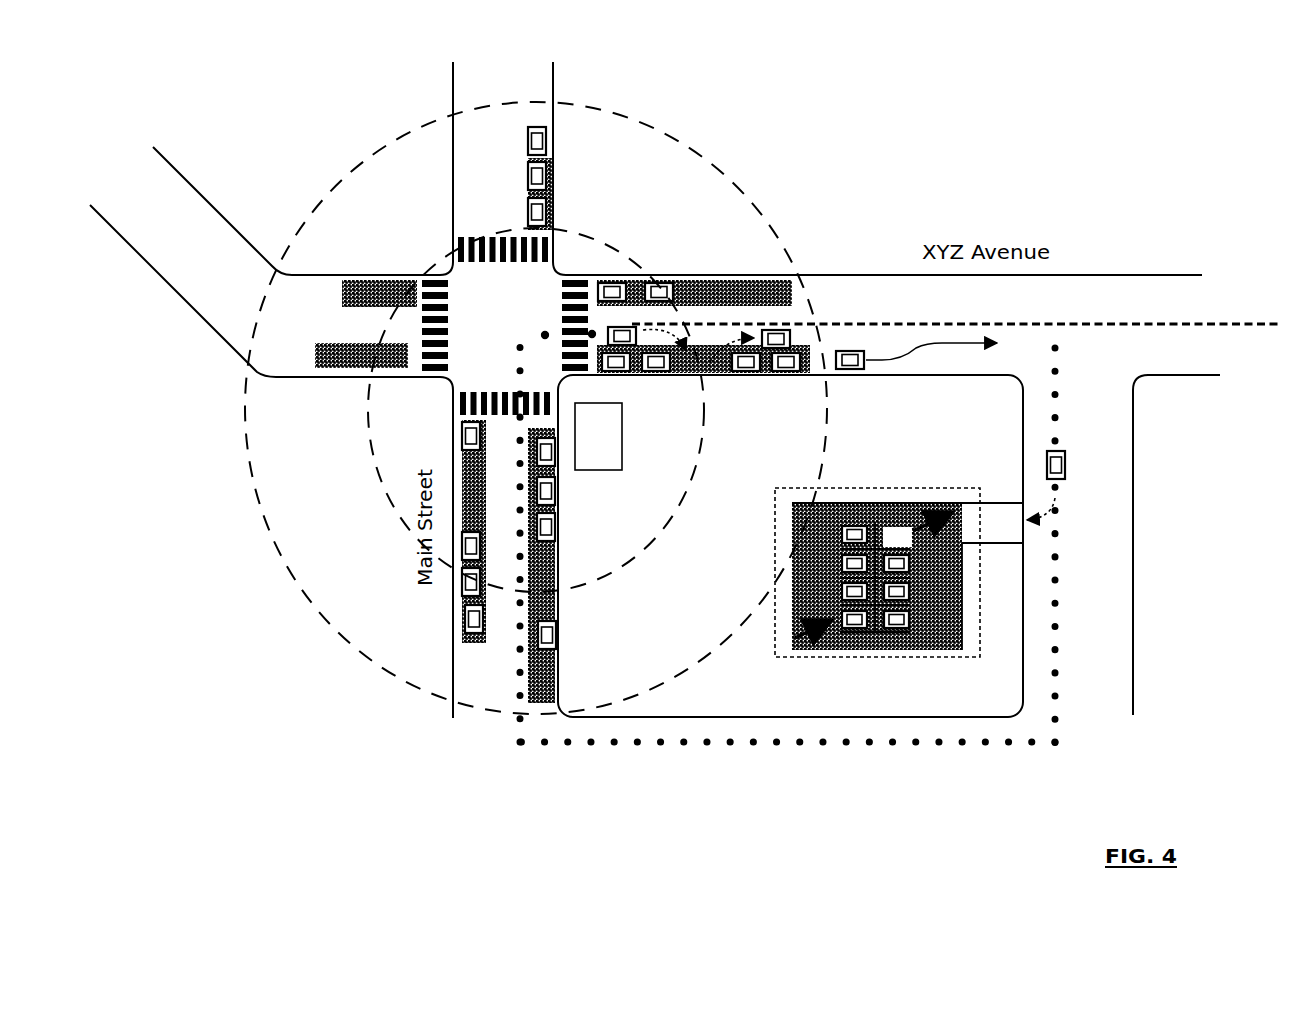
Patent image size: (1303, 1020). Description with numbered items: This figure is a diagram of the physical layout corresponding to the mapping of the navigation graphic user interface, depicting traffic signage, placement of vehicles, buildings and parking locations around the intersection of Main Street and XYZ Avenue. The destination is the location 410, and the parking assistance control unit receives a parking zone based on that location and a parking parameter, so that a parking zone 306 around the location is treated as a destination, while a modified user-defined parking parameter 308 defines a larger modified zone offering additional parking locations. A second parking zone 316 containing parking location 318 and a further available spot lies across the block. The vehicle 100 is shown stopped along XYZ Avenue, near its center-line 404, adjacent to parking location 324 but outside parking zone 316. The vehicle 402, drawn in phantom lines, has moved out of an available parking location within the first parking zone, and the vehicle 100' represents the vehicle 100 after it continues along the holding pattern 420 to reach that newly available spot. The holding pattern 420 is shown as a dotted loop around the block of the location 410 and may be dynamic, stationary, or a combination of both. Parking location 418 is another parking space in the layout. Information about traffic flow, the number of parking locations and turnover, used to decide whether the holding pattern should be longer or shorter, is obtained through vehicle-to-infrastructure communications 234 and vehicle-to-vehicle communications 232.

The vehicle 100 is at (891, 319).
The vehicle at parking location P1 100' is at (854, 389).
The vehicle-to-vehicle communications 232 is at (808, 644).
The vehicle-to-infrastructure communications 234 is at (948, 510).
The parking zone 306 is at (372, 453).
The modified user-defined parking parameter 308 is at (740, 186).
The parking zone 316 is at (980, 560).
The parking location 318 is at (812, 523).
The parking location 324 is at (772, 378).
The vehicle 402 is at (778, 313).
The center-line 404 is at (1042, 326).
The location 410 is at (648, 471).
The parking location 418 is at (325, 378).
The holding pattern 420 is at (1068, 388).